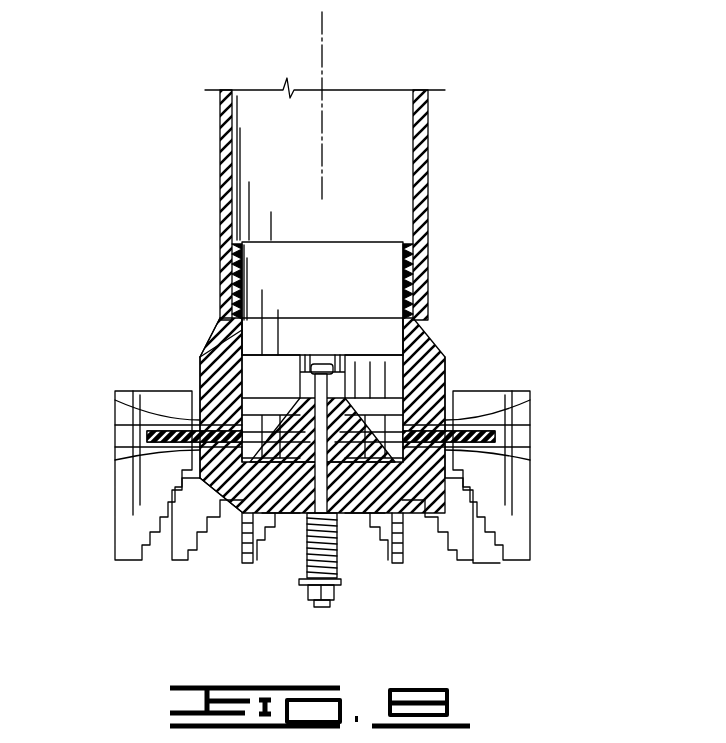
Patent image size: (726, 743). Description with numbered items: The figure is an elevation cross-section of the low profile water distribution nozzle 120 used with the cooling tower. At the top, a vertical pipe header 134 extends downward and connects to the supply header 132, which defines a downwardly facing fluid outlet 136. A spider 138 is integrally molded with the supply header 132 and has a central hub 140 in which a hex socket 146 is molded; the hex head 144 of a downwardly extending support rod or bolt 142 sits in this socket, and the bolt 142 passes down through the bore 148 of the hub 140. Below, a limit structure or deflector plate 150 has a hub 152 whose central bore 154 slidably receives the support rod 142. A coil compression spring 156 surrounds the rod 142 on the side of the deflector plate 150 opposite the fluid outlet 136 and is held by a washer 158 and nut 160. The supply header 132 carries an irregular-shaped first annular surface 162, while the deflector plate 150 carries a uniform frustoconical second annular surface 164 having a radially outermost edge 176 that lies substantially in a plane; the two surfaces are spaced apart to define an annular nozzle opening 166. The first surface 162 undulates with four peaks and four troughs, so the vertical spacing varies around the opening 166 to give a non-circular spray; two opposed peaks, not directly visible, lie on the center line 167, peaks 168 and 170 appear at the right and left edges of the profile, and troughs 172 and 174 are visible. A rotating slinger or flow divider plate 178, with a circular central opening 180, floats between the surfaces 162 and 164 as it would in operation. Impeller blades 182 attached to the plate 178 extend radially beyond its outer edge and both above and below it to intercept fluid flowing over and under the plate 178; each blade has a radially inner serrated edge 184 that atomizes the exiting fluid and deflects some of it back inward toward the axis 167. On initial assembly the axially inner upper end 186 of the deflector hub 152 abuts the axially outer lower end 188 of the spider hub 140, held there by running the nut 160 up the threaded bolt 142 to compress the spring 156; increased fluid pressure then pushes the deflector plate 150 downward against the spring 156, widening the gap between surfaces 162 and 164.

The nozzle 120 is at (604, 166).
The supply header 132 is at (420, 330).
The vertical pipe header 134 is at (420, 152).
The fluid outlet 136 is at (195, 441).
The spider 138 is at (410, 305).
The central hub 140 is at (370, 395).
The support rod or bolt 142 is at (298, 514).
The hex head 144 is at (332, 392).
The hex socket 146 is at (317, 364).
The bore 148 is at (315, 372).
The limit structure or deflector plate 150 is at (418, 500).
The hub 152 is at (358, 514).
The central bore 154 is at (253, 518).
The coil compression spring 156 is at (308, 565).
The washer 158 is at (306, 588).
The nut 160 is at (318, 606).
The first annular surface 162 is at (425, 440).
The second annular surface 164 is at (450, 457).
The annular nozzle opening 166 is at (200, 456).
The center line 167 is at (326, 58).
The peak 168 is at (430, 412).
The peak 170 is at (200, 428).
The trough 172 is at (450, 402).
The trough 174 is at (195, 426).
The radially outermost edge 176 is at (205, 468).
The slinger plate or flow divider plate 178 is at (495, 437).
The circular central opening 180 is at (432, 342).
The impeller blades 182 is at (525, 520).
The serrated edge 184 is at (490, 553).
The axially inner upper end 186 is at (300, 392).
The axially outer or lower end 188 is at (270, 398).